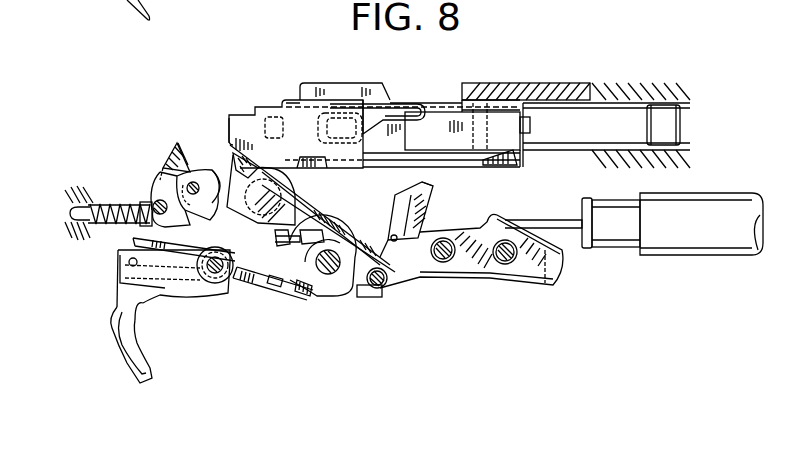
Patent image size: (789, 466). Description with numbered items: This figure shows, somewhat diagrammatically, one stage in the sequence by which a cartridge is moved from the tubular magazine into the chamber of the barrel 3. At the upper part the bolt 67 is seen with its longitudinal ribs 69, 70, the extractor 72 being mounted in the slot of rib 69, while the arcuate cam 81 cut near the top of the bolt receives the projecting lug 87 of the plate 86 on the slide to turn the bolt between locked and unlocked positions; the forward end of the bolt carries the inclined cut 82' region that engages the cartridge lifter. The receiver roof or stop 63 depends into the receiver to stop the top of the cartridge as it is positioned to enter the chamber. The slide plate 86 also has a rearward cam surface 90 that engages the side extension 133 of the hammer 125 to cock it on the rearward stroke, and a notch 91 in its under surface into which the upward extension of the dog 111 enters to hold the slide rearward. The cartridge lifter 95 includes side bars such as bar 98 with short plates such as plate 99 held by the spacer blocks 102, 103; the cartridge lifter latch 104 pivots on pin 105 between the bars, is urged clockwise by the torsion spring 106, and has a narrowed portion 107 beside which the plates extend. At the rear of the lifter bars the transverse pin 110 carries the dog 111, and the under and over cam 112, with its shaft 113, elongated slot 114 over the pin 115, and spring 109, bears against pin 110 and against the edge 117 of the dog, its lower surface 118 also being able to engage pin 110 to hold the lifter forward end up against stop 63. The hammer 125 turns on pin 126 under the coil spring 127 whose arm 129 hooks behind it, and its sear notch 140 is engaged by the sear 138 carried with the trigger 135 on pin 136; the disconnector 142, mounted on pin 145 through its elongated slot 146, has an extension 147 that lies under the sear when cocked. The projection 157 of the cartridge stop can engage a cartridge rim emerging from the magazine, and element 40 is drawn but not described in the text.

The barrel 3 is at (646, 100).
The bolt tube 40 is at (691, 205).
The receiver roof or stop 63 is at (537, 84).
The bolt 67 is at (367, 80).
The rib 69 is at (503, 100).
The rib 70 is at (335, 83).
The extractor 72 is at (447, 117).
The arcuate cam 81 is at (396, 100).
The rail end 82' is at (533, 162).
The plate 86 is at (262, 112).
The projecting lug 87 is at (320, 129).
The rearward cam surface 90 is at (228, 134).
The notch 91 is at (318, 168).
The cartridge lifter 95 is at (484, 288).
The side bar 98 is at (375, 225).
The short plate 99 is at (562, 262).
The spacer block 102 is at (443, 262).
The spacer block 103 is at (507, 264).
The cartridge lifter latch 104 is at (414, 190).
The pin 105 is at (377, 289).
The torsion spring 106 is at (362, 297).
The narrowed portion 107 is at (426, 208).
The spring 109 is at (99, 205).
The transverse pin 110 is at (192, 180).
The dog 111 is at (176, 162).
The under and over cam 112 is at (165, 195).
The shaft 113 is at (74, 206).
The elongated slot 114 is at (162, 172).
The pin 115 is at (158, 203).
The edge 117 is at (197, 192).
The lower surface 118 is at (190, 218).
The hammer 125 is at (292, 197).
The pin 126 is at (324, 272).
The coil spring 127 is at (300, 288).
The arm 129 is at (313, 237).
The side extension 133 is at (240, 163).
The trigger 135 is at (141, 365).
The pin 136 is at (219, 298).
The sear 138 is at (258, 290).
The sear notch 140 is at (314, 293).
The disconnector 142 is at (236, 236).
The pin 145 is at (128, 262).
The elongated slot 146 is at (138, 264).
The extension 147 is at (134, 241).
The projection 157 is at (572, 222).